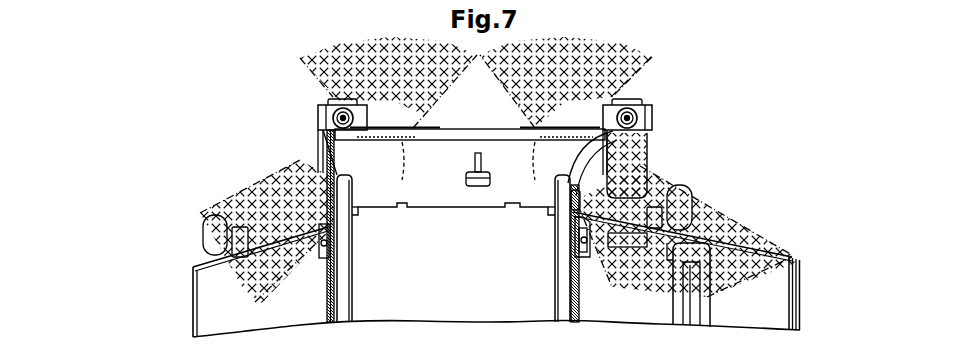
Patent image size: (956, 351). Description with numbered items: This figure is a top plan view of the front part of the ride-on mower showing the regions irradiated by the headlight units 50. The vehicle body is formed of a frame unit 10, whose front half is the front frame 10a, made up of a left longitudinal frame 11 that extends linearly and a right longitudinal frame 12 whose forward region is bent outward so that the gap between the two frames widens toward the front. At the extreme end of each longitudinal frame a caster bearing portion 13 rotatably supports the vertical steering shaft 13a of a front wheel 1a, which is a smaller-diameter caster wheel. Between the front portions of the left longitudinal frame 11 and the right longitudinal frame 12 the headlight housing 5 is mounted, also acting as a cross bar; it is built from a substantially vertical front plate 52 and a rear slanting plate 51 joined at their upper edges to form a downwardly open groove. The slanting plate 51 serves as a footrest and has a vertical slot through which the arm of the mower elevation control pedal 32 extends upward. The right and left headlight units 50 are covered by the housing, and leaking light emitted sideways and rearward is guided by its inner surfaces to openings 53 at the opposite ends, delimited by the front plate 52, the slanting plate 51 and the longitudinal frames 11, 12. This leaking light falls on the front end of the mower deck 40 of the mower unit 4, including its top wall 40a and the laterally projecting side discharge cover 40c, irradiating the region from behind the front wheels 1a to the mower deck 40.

The front wheel 1a is at (357, 101).
The mower unit 4 is at (738, 212).
The headlight housing 5 is at (490, 128).
The frame unit 10 is at (421, 263).
The front frame 10a is at (329, 286).
The left longitudinal frame 11 is at (346, 268).
The right longitudinal frame 12 is at (557, 305).
The caster bearing portion 13 is at (338, 112).
The vertical steering shaft 13a is at (321, 120).
The mower elevation control pedal 32 is at (479, 188).
The mower deck 40 is at (262, 238).
The top wall 40a is at (685, 303).
The side discharge cover 40c is at (762, 241).
The headlight unit 50 is at (468, 169).
The slanting plate 51 is at (433, 193).
The front plate 52 is at (457, 131).
The opening 53 is at (333, 170).